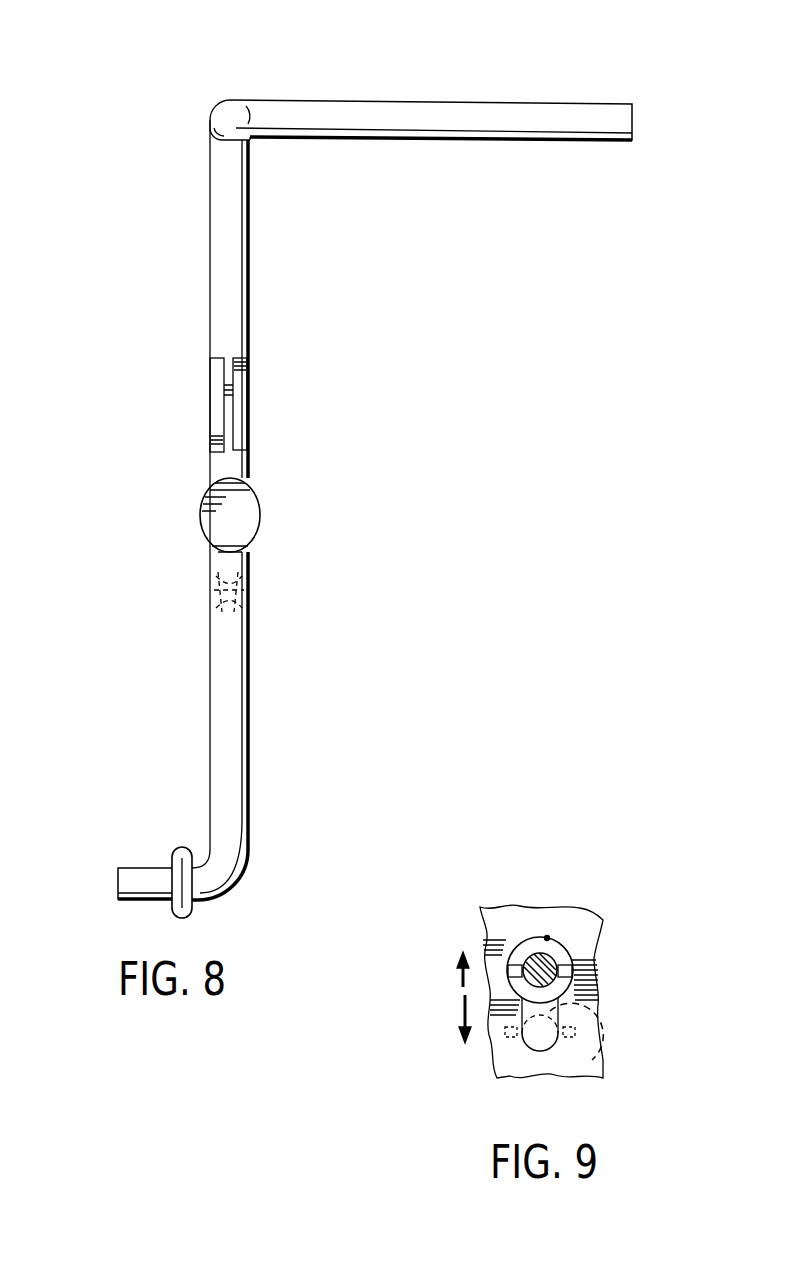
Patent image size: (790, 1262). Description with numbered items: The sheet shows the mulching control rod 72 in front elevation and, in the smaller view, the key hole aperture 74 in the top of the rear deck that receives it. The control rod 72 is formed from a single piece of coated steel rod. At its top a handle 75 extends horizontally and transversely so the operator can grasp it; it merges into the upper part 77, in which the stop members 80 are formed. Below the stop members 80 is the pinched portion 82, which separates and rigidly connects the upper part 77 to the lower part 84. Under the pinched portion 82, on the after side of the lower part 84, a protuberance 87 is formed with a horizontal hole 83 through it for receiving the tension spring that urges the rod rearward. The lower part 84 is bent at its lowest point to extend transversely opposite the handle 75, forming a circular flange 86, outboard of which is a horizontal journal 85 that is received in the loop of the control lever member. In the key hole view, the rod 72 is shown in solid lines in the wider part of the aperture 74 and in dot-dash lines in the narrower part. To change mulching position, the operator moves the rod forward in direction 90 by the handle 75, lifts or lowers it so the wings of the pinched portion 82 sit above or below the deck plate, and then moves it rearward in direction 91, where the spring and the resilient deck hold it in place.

In FIG. 8, the control rod 72 is at (260, 312).
In FIG. 9, the key hole aperture 74 is at (547, 938).
In FIG. 8, the handle 75 is at (443, 100).
In FIG. 8, the upper part 77 is at (209, 292).
In FIG. 9, the upper part 77 is at (573, 948).
In FIG. 8, the stop members 80 is at (210, 400).
In FIG. 8, the pinched portion 82 is at (250, 508).
In FIG. 9, the pinched portion 82 is at (537, 937).
In FIG. 8, the hole 83 is at (243, 590).
In FIG. 8, the lower part 84 is at (248, 752).
In FIG. 8, the horizontal journal 85 is at (118, 886).
In FIG. 8, the circular flange 86 is at (192, 912).
In FIG. 9, the protuberance 87 is at (590, 1022).
In FIG. 9, the direction 90 is at (457, 975).
In FIG. 9, the direction 91 is at (460, 1018).